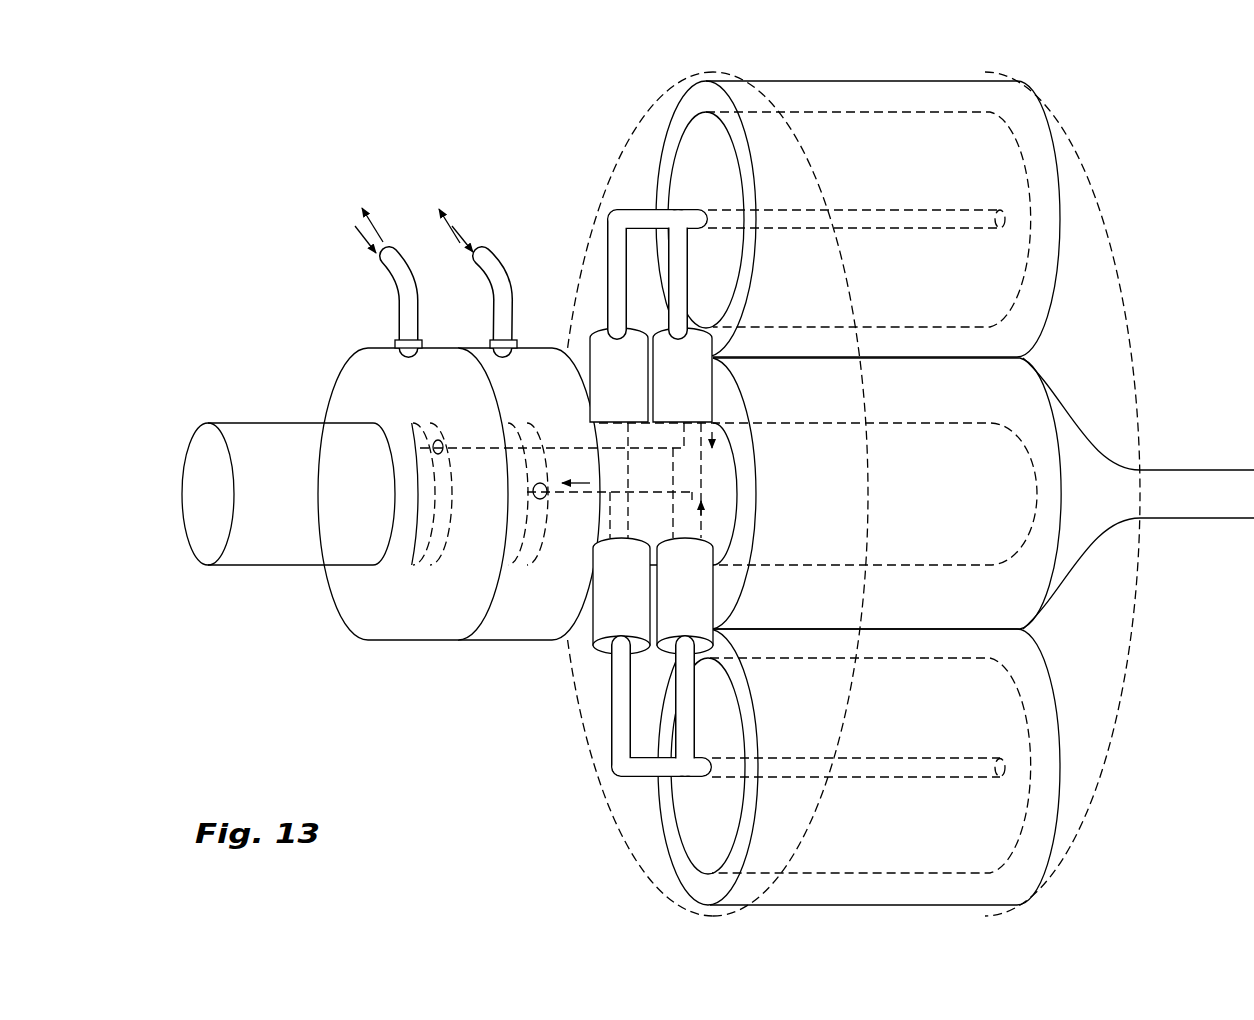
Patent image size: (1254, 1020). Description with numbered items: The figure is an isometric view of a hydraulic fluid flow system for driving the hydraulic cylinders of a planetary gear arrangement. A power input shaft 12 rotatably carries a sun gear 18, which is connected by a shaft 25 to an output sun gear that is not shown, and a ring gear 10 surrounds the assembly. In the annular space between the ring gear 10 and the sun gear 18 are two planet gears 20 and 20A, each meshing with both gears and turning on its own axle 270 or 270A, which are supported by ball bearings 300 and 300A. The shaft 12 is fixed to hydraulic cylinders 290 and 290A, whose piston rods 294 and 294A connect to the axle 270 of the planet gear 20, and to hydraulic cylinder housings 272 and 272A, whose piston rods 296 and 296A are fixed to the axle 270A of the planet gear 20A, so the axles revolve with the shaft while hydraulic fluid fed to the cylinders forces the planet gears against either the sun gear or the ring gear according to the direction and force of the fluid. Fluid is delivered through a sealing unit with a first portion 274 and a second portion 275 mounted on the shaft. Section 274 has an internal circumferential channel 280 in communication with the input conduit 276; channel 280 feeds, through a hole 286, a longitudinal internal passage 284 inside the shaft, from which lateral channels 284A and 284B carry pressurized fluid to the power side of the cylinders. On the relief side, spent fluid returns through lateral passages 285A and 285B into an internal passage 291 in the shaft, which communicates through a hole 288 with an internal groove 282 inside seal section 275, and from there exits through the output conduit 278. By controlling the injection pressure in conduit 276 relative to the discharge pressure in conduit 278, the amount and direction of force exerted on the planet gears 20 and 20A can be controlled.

The ring gear 10 is at (1133, 380).
The power input shaft 12 is at (260, 550).
The sun gear 18 is at (1012, 390).
The planet gear 20 is at (698, 96).
The planet gear 20A is at (703, 883).
The shaft 25 is at (1218, 500).
The axle 270 is at (907, 208).
The axle 270A is at (885, 778).
The hydraulic cylinder housing 272 is at (610, 613).
The hydraulic cylinder housing 272A is at (690, 598).
The first portion of sealing unit 274 is at (353, 392).
The second portion of sealing unit 275 is at (510, 640).
The input conduit 276 is at (402, 292).
The output conduit 278 is at (487, 292).
The internal circumferential channel 280 is at (445, 523).
The internal groove 282 is at (520, 560).
The longitudinal internal passage 284 is at (470, 448).
The lateral channel 284A is at (628, 508).
The lateral channel 284B is at (675, 517).
The lateral passage 285A is at (612, 514).
The lateral passage 285B is at (693, 497).
The hole 286 is at (433, 448).
The hole 288 is at (546, 480).
The hydraulic cylinder 290 is at (613, 357).
The hydraulic cylinder 290A is at (688, 390).
The internal passage 291 is at (568, 492).
The piston rod 294 is at (617, 268).
The piston rod 294A is at (685, 289).
The piston rod 296 is at (622, 720).
The piston rod 296A is at (685, 718).
The ball bearing 300 is at (690, 177).
The ball bearing 300A is at (705, 810).